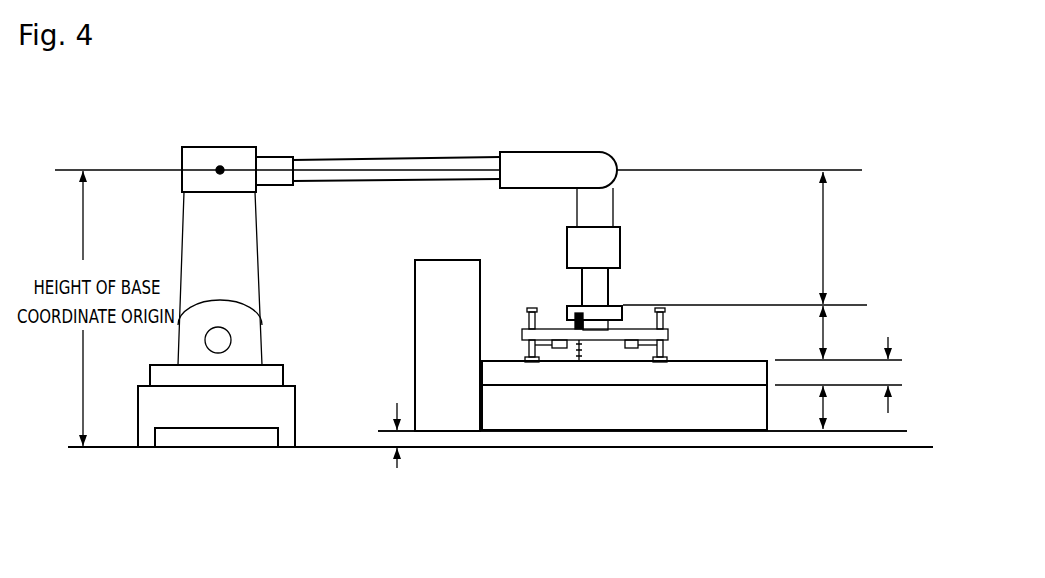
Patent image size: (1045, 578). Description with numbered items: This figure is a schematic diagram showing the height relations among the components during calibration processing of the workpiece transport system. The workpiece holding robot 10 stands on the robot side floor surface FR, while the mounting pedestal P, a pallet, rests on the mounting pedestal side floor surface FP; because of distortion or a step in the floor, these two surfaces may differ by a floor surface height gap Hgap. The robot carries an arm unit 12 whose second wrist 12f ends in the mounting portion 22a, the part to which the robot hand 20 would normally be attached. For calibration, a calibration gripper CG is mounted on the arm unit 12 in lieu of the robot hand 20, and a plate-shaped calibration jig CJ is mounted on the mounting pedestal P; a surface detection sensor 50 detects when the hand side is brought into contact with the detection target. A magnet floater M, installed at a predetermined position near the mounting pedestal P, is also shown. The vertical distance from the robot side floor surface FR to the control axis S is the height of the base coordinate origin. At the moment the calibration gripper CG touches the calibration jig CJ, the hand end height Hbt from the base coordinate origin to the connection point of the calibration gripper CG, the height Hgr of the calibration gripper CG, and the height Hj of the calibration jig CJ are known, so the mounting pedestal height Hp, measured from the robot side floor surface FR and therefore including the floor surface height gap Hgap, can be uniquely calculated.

The workpiece holding robot 10 is at (364, 133).
The arm unit 12 is at (550, 148).
The second wrist 12f is at (588, 291).
The mounting portion 22a is at (616, 305).
The robot hand 20 is at (681, 345).
The surface detection sensor 50 is at (590, 352).
The control axis S is at (220, 164).
The magnet floater M is at (440, 256).
The calibration gripper CG is at (634, 323).
The calibration jig CJ is at (731, 367).
The mounting pedestal P is at (776, 415).
The mounting pedestal side floor surface FP is at (515, 431).
The robot side floor surface FR is at (302, 447).
The hand end height Hbt is at (843, 238).
The height of calibration gripper Hgr is at (842, 332).
The height of calibration jig Hj is at (908, 375).
The mounting pedestal height Hp is at (838, 407).
The floor surface height gap Hgap is at (357, 435).